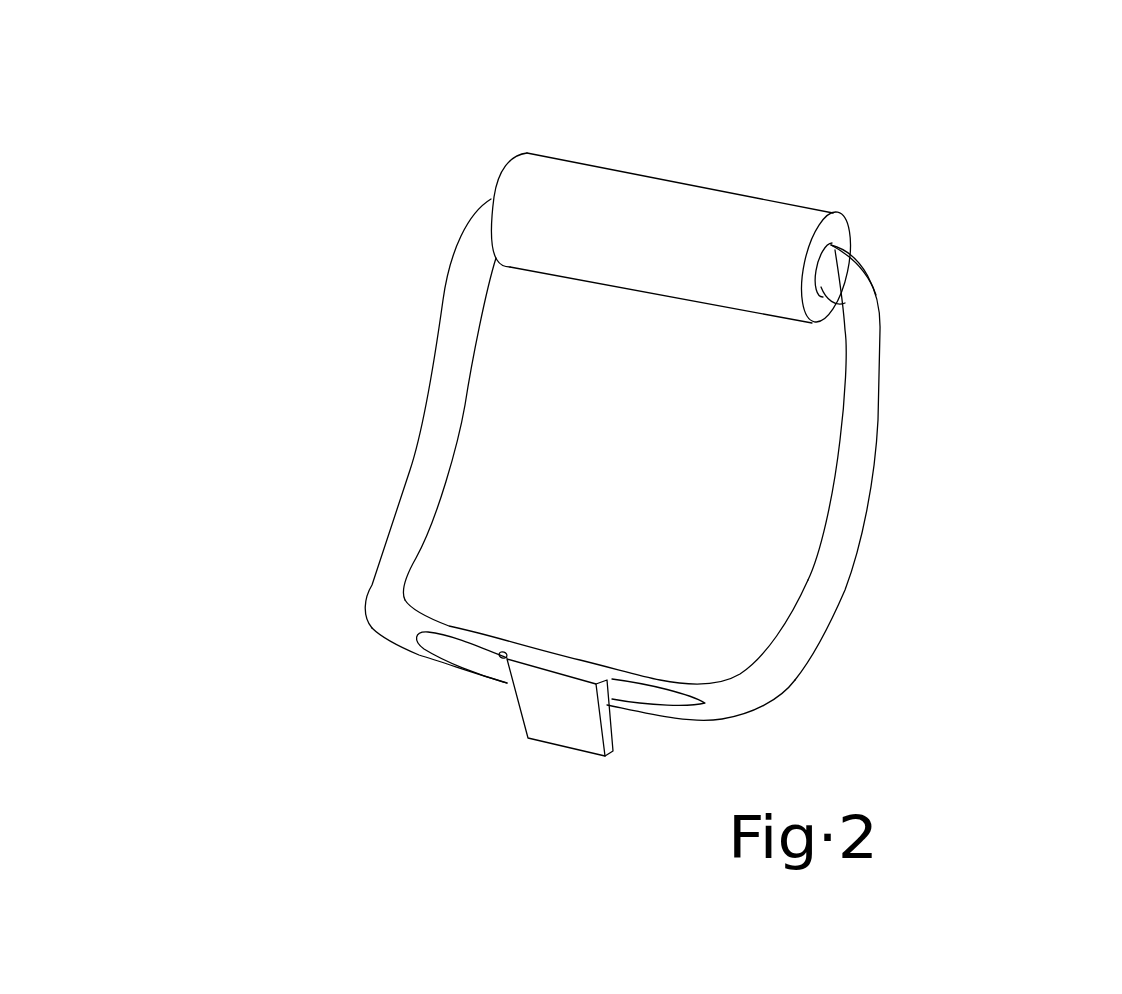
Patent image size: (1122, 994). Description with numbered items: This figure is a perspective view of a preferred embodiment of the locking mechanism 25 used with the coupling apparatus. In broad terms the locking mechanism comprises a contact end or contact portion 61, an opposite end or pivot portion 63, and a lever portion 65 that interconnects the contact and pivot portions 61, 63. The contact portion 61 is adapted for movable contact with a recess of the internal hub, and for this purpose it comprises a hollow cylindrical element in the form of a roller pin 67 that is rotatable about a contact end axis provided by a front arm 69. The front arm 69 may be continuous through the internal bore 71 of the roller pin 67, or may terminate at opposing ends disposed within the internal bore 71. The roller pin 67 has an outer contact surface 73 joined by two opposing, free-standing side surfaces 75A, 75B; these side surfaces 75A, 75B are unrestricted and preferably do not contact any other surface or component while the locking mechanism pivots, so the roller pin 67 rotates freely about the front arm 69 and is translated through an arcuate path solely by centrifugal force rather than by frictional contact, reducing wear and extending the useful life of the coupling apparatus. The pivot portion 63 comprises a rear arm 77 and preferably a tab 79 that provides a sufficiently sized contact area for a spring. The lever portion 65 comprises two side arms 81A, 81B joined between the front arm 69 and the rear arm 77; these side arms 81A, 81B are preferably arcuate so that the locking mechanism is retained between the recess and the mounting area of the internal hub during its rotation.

The strap assembly 25 is at (952, 222).
The contact portion 61 is at (442, 191).
The pivot portion 63 is at (340, 624).
The lever portion 65 is at (383, 381).
The roller pin 67 is at (593, 167).
The front arm 69 is at (859, 262).
The internal bore 71 is at (823, 297).
The outer contact surface 73 is at (689, 197).
The side surface 75A is at (840, 216).
The side surface 75B is at (502, 173).
The rear arm 77 is at (394, 648).
The tab 79 is at (553, 745).
The side arm 81A is at (866, 508).
The side arm 81B is at (440, 290).